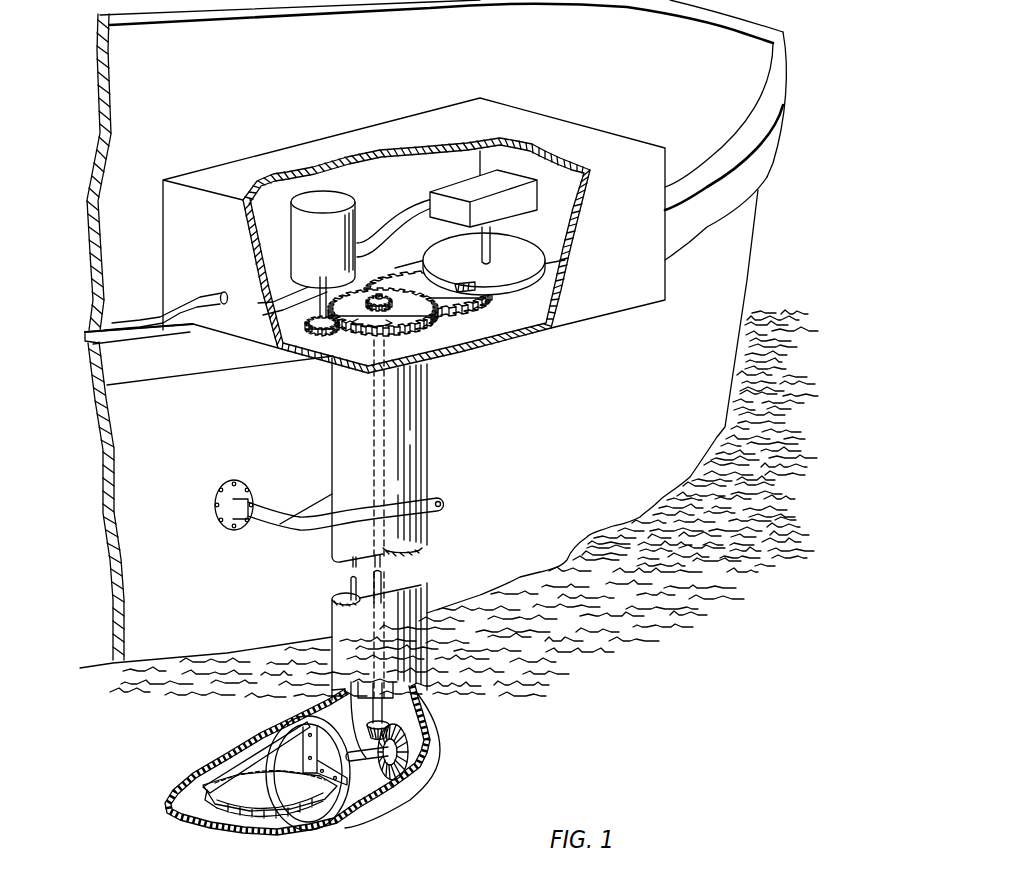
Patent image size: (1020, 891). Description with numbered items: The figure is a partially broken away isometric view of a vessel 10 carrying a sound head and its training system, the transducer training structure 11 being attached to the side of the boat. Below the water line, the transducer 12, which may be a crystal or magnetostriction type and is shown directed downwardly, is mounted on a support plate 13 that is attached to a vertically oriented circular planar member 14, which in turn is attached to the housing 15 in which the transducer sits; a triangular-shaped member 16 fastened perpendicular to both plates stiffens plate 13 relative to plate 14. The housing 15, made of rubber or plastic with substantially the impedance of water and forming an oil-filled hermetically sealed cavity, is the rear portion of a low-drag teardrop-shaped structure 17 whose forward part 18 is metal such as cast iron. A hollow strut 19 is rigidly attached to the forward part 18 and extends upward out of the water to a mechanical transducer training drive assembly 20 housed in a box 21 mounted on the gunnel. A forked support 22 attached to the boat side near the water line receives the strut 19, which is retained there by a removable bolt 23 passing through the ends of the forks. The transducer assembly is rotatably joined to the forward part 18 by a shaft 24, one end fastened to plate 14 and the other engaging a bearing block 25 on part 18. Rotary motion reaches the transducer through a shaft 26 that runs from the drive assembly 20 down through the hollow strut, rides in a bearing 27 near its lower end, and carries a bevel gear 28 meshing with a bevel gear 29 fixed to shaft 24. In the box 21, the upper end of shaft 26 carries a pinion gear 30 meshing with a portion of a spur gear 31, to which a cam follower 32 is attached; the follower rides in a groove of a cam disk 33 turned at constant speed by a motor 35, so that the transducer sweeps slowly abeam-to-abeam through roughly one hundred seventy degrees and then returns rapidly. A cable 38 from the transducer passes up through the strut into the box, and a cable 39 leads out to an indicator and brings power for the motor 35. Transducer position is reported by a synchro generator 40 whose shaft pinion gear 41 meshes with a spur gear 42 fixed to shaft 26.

The vessel 10 is at (604, 438).
The transducer training structure 11 is at (440, 421).
The transducer 12 is at (217, 800).
The support plate 13 is at (270, 793).
The circular planar member 14 is at (313, 818).
The housing 15 is at (203, 832).
The triangular-shaped member 16 is at (273, 760).
The teardrop-shaped structure 17 is at (320, 779).
The forward part 18 is at (430, 777).
The strut 19 is at (428, 524).
The transducer training drive assembly 20 is at (517, 348).
The box 21 is at (623, 261).
The support 22 is at (300, 530).
The removable bolt 23 is at (440, 500).
The shaft 24 is at (370, 762).
The bearing block 25 is at (422, 737).
The shaft 26 is at (383, 578).
The bearing 27 is at (390, 694).
The bevel gear 28 is at (377, 729).
The bevel gear 29 is at (408, 760).
The pinion gear 30 is at (367, 308).
The spur gear 31 is at (441, 301).
The cam follower 32 is at (489, 290).
The cam disk 33 is at (470, 260).
The motor 35 is at (496, 193).
The cable 38 is at (348, 583).
The cable 39 is at (168, 317).
The synchro generator 40 is at (331, 209).
The pinion gear 41 is at (328, 332).
The spur gear 42 is at (403, 324).